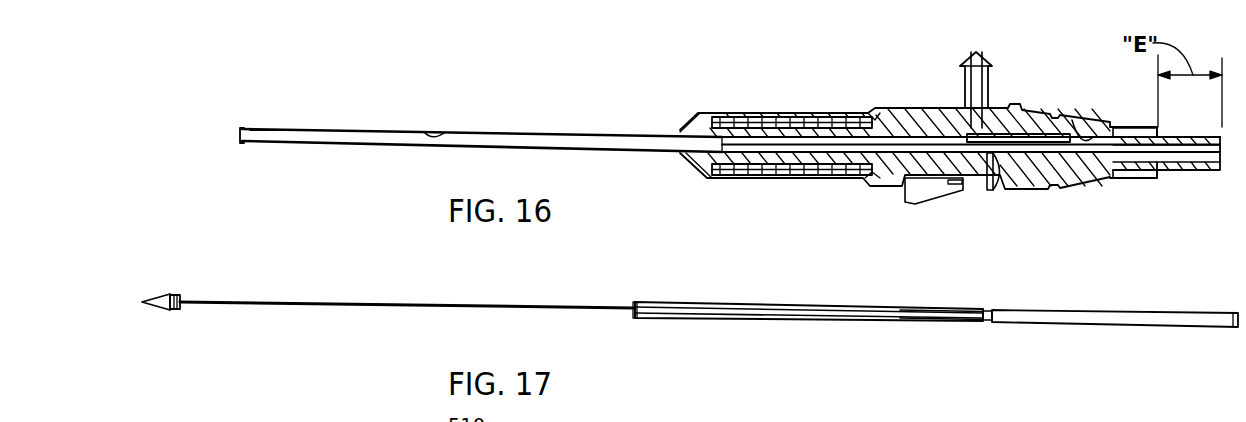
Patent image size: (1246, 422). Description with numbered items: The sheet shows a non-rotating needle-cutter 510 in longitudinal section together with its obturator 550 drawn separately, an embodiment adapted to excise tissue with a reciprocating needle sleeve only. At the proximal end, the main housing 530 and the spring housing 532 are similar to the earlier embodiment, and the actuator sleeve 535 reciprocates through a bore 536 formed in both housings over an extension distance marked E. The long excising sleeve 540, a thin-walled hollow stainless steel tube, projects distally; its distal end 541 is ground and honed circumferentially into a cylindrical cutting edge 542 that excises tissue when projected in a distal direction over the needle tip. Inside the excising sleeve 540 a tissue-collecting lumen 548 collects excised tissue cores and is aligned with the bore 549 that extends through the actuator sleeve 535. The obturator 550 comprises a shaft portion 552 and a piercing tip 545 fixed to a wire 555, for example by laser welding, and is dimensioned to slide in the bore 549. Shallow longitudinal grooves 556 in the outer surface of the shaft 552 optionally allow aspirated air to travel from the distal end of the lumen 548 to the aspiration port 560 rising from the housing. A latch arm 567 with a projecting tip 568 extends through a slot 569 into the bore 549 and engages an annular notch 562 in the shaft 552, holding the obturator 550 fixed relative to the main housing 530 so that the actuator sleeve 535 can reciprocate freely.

In FIG. 16, the needle-cutter 510 is at (543, 77).
In FIG. 16, the main housing 530 is at (890, 108).
In FIG. 16, the spring housing 532 is at (780, 117).
In FIG. 16, the actuator sleeve 535 is at (1170, 172).
In FIG. 16, the bore 536 is at (928, 125).
In FIG. 16, the excising sleeve 540 is at (565, 133).
In FIG. 16, the distal end 541 is at (287, 128).
In FIG. 16, the cylindrical cutting edge 542 is at (243, 128).
In FIG. 16, the tissue-collecting lumen 548 is at (425, 132).
In FIG. 16, the bore 549 is at (1080, 128).
In FIG. 16, the aspiration port 560 is at (988, 78).
In FIG. 16, the latch arm 567 is at (933, 190).
In FIG. 16, the projecting tip 568 is at (992, 192).
In FIG. 16, the slot 569 is at (1032, 160).
In FIG. 17, the piercing tip 545 is at (147, 297).
In FIG. 17, the obturator 550 is at (665, 278).
In FIG. 17, the shaft portion 552 is at (765, 303).
In FIG. 17, the wire 555 is at (370, 302).
In FIG. 17, the shallow longitudinal grooves 556 is at (893, 310).
In FIG. 17, the annular notch 562 is at (988, 309).